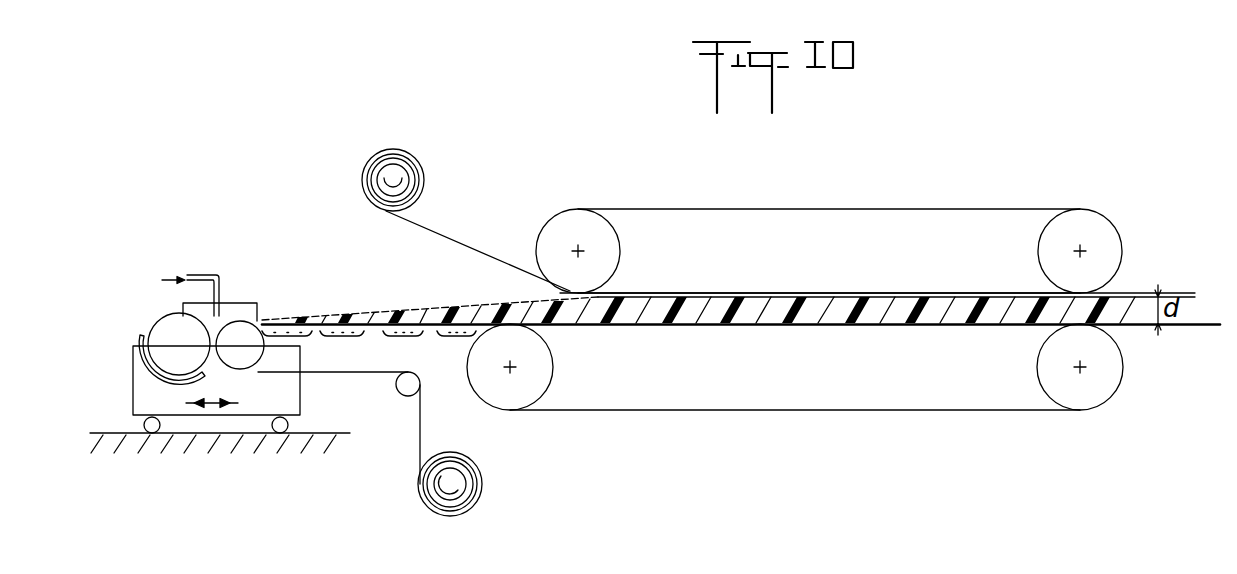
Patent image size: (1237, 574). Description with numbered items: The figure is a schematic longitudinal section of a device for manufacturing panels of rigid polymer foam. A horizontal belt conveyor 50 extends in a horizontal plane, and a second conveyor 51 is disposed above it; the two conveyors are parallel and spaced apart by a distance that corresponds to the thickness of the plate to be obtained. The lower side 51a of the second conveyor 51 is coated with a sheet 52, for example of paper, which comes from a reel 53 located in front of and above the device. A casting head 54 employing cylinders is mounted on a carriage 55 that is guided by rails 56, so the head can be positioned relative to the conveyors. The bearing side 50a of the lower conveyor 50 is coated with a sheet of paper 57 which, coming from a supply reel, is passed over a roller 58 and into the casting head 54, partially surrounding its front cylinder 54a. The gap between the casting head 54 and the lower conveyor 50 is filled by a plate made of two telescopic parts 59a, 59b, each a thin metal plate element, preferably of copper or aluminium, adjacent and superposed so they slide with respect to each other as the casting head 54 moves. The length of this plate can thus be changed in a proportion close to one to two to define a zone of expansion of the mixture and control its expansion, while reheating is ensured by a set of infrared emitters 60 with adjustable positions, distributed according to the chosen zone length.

The horizontal belt conveyor 50 is at (740, 387).
The bearing side of the lower conveyor 50a is at (780, 328).
The second conveyor 51 is at (825, 232).
The lower side of the conveyor 51a is at (737, 295).
The sheet 52 is at (483, 257).
The reel 53 is at (398, 170).
The casting head 54 is at (151, 323).
The front cylinder 54a is at (237, 340).
The carriage 55 is at (297, 403).
The rails 56 is at (192, 436).
The sheet of paper 57 is at (413, 323).
The roller 58 is at (414, 387).
The first telescopic plate part 59a is at (325, 320).
The second telescopic plate part 59b is at (440, 325).
The infrared emitters 60 is at (443, 340).